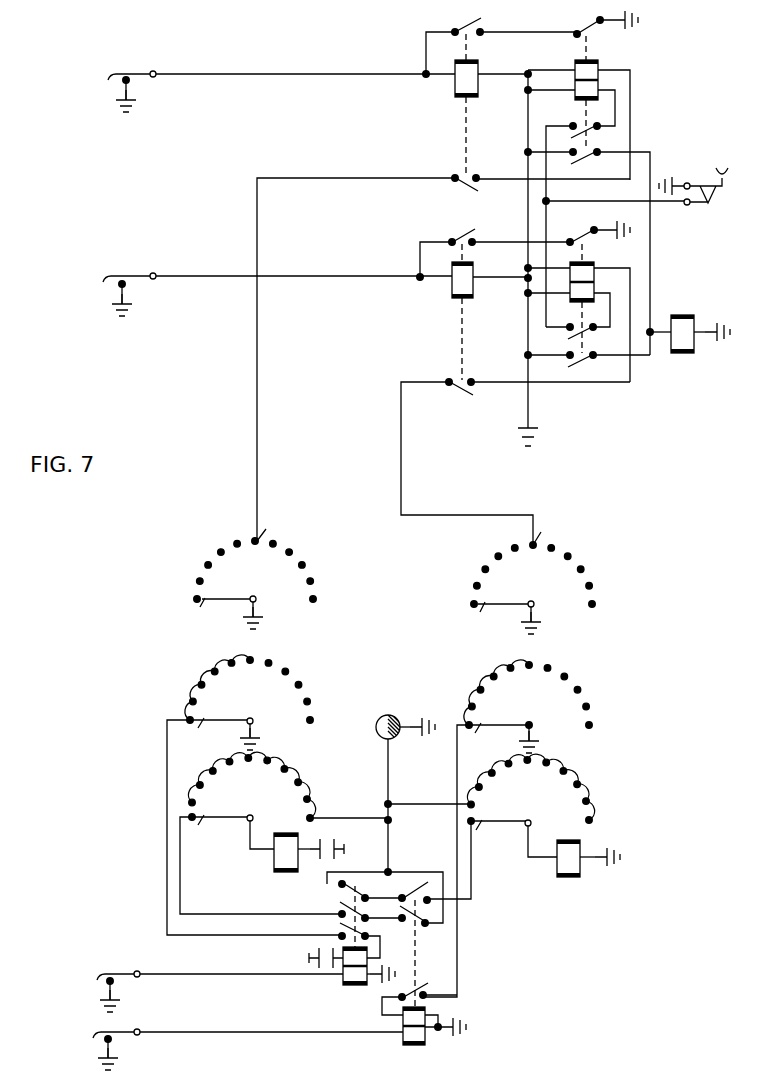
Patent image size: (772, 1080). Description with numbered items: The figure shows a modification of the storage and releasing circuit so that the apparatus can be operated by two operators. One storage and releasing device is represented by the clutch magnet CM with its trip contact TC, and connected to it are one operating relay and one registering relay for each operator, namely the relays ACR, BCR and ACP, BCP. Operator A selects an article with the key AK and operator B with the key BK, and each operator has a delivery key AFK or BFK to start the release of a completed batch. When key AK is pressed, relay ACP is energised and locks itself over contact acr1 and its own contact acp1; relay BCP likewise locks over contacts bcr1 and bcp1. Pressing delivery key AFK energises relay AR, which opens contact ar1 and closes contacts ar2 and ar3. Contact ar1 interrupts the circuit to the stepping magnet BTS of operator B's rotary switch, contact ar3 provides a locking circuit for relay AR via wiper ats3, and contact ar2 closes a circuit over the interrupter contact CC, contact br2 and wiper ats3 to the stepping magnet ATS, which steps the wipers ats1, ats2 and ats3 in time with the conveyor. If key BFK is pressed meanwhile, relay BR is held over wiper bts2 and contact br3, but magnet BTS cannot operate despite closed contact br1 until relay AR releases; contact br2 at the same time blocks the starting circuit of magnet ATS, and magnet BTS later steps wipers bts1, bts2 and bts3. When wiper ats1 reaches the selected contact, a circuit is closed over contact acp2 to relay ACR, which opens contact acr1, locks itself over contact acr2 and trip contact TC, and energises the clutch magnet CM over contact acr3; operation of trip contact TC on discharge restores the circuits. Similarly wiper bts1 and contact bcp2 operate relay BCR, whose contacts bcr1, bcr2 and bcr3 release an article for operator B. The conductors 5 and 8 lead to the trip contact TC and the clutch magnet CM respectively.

The conductor to transmitter contact TC 5 is at (615, 209).
The conductor to relay CM 8 is at (659, 340).
The key AK is at (270, 91).
The key BK is at (270, 294).
The delivery key AFK is at (202, 991).
The delivery key BFK is at (229, 1049).
The registering relay ACP is at (491, 105).
The operating relay ACR is at (582, 108).
The registering relay BCP is at (490, 312).
The operating relay BCR is at (580, 313).
The clutch magnet CM is at (699, 325).
The trip contact TC is at (694, 184).
The interrupter contact CC is at (404, 784).
The stepping magnet ATS is at (308, 866).
The stepping magnet BTS is at (586, 872).
The relay AR is at (352, 976).
The relay BR is at (434, 1036).
The contact acp1 is at (500, 46).
The contact acp2 is at (443, 358).
The contact acr1 is at (590, 24).
The contact acr2 is at (582, 225).
The contact acr3 is at (589, 252).
The contact bcp1 is at (493, 251).
The contact bcp2 is at (515, 462).
The contact bcr1 is at (588, 233).
The contact bcr2 is at (581, 336).
The contact bcr3 is at (589, 364).
The wiper ats1 is at (255, 579).
The wiper ats2 is at (254, 795).
The wiper ats3 is at (284, 833).
The wiper bts1 is at (533, 583).
The wiper bts2 is at (507, 828).
The wiper bts3 is at (491, 826).
The contact ar1 is at (370, 888).
The contact ar2 is at (353, 909).
The contact ar3 is at (341, 938).
The contact br1 is at (416, 888).
The contact br2 is at (405, 924).
The contact br3 is at (419, 997).